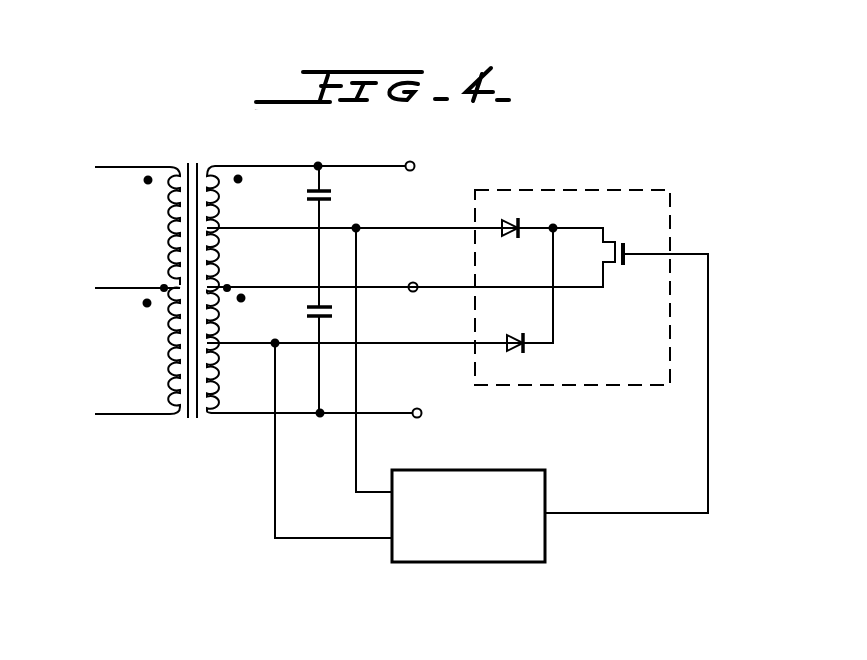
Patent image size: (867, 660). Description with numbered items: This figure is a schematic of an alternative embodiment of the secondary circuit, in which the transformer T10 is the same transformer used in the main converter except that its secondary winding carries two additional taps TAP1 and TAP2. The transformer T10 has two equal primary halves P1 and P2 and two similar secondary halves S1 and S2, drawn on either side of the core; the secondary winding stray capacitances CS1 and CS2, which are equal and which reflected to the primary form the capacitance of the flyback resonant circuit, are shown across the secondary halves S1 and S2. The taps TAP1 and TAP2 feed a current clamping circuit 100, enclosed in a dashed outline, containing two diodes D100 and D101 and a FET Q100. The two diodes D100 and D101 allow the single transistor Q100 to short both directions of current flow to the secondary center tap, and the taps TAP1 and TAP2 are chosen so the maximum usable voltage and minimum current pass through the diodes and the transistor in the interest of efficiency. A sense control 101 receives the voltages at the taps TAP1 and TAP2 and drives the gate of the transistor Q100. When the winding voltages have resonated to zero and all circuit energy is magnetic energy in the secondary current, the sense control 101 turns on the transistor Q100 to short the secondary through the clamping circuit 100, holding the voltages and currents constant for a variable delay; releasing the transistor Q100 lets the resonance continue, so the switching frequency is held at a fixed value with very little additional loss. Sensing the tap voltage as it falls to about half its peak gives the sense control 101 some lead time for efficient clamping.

The transformer T10 is at (201, 274).
The primary half P1 is at (137, 229).
The primary half P2 is at (137, 351).
The secondary half S1 is at (310, 230).
The secondary half S2 is at (263, 353).
The secondary winding stray capacitance CS1 is at (334, 190).
The secondary winding stray capacitance CS2 is at (304, 314).
The secondary winding tap TAP1 is at (453, 359).
The secondary winding tap TAP2 is at (414, 382).
The diode D100 is at (516, 242).
The diode D101 is at (518, 356).
The FET transistor Q100 is at (616, 237).
The current clamping circuit 100 is at (648, 378).
The sense control 101 is at (450, 563).